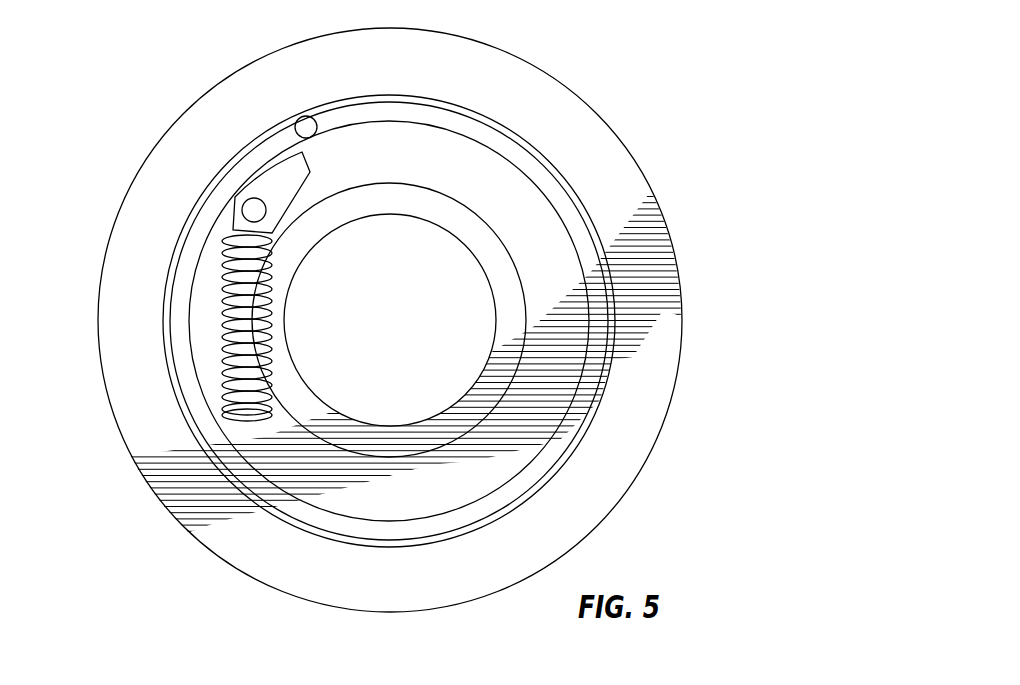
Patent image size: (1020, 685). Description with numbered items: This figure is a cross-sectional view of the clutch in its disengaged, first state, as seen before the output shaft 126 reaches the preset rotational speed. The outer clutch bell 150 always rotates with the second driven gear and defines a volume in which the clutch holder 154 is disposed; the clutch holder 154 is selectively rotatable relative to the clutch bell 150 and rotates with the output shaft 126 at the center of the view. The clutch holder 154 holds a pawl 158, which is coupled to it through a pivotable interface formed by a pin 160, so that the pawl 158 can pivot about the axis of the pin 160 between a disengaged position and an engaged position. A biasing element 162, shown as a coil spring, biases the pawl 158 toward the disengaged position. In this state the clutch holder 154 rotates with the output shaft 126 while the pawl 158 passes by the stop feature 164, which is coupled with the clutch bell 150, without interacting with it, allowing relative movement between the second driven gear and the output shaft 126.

The output shaft 126 is at (409, 329).
The clutch bell 150 is at (583, 127).
The clutch holder 154 is at (540, 430).
The pawl 158 is at (265, 177).
The pin 160 is at (250, 205).
The biasing element 162 is at (210, 350).
The stop feature 164 is at (300, 120).